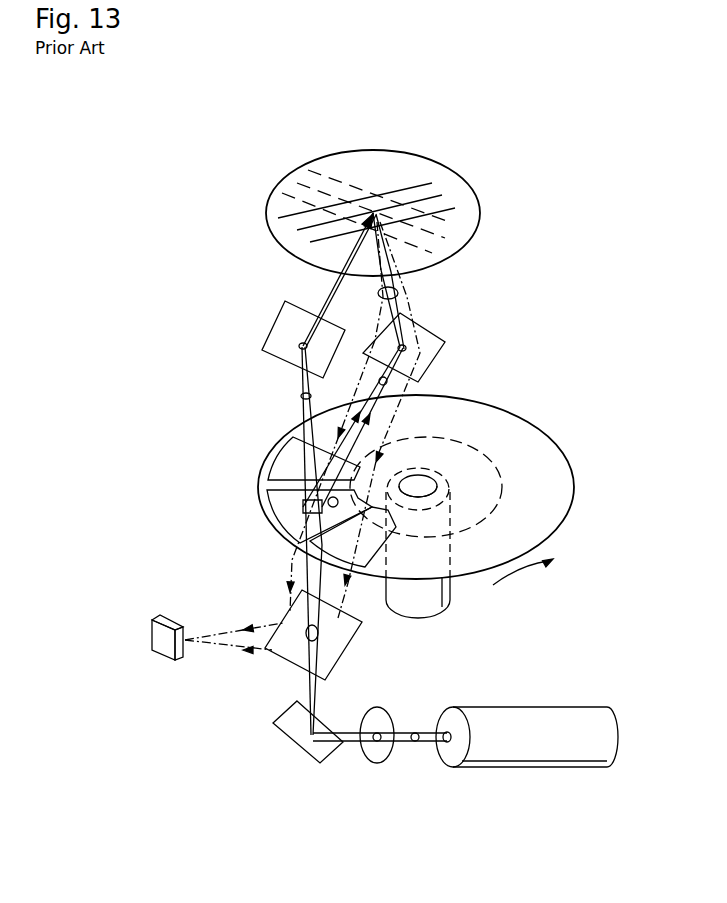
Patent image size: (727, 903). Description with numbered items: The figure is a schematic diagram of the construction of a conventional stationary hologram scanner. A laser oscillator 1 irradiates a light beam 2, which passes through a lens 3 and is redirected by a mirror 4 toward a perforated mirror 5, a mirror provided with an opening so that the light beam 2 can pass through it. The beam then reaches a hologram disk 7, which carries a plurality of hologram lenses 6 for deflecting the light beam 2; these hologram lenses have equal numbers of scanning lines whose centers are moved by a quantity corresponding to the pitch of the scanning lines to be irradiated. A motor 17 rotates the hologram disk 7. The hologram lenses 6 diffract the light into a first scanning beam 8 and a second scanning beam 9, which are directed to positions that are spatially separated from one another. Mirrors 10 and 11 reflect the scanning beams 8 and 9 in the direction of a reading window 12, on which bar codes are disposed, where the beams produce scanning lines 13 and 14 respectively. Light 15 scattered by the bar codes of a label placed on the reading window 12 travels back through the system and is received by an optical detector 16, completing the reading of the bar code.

The laser oscillator 1 is at (513, 768).
The light beam 2 is at (415, 745).
The lens 3 is at (377, 767).
The mirror 4 is at (303, 752).
The perforated mirror 5 is at (342, 662).
The hologram lenses 6 is at (288, 498).
The hologram disk 7 is at (563, 495).
The first scanning beam 8 is at (405, 392).
The second scanning beam 9 is at (300, 393).
The mirror 10 is at (433, 367).
The mirror 11 is at (265, 333).
The reading window 12 is at (480, 200).
The scanning line 13 is at (292, 236).
The scanning line 14 is at (298, 173).
The scattered light 15 is at (398, 296).
The optical detector 16 is at (160, 653).
The motor 17 is at (432, 607).